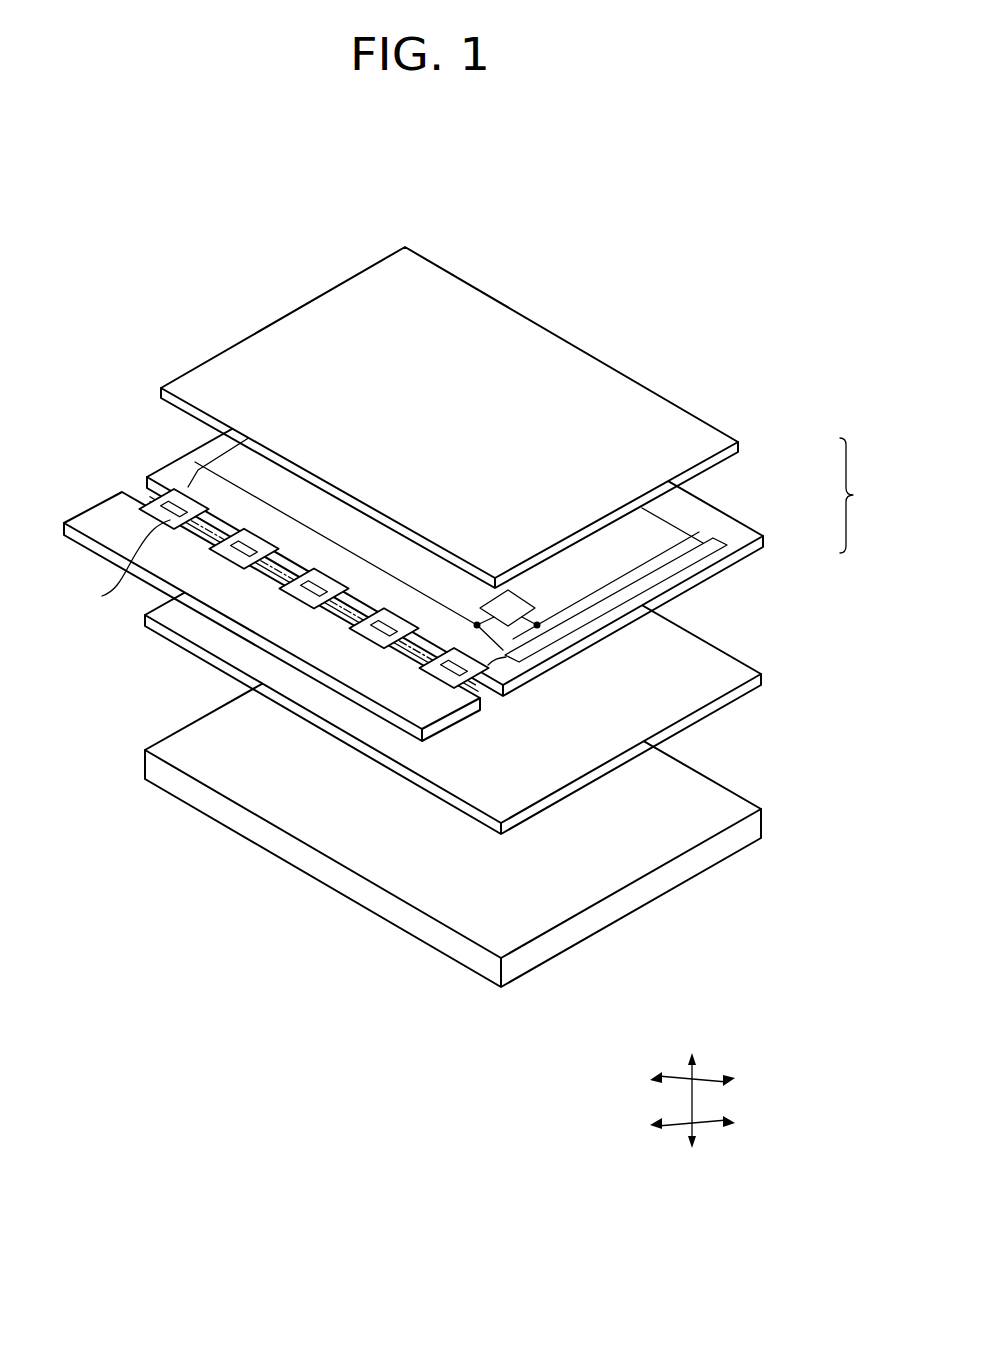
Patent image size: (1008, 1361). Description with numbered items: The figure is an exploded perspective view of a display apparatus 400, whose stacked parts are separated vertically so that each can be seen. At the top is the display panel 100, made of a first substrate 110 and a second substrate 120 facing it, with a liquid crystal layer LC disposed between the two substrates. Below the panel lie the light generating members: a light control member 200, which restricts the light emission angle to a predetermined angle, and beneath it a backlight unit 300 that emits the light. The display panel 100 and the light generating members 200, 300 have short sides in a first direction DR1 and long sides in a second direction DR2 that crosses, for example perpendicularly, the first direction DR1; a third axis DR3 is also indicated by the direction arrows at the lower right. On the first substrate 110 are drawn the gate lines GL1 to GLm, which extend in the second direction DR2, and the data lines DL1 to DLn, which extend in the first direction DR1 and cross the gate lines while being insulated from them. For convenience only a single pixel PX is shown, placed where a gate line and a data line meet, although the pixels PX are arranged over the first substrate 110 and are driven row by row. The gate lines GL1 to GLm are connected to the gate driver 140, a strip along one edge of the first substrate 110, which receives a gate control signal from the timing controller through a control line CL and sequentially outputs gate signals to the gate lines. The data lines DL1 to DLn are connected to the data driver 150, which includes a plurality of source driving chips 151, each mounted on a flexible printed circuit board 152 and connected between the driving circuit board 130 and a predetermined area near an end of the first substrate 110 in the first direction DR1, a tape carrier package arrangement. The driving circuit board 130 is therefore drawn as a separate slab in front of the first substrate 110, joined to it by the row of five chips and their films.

The display panel 100 is at (868, 495).
The first substrate 110 is at (764, 541).
The second substrate 120 is at (739, 443).
The driving circuit board 130 is at (106, 509).
The gate driver 140 is at (683, 562).
The data driver 150 is at (152, 494).
The source driving chip 151 is at (160, 512).
The flexible printed circuit board 152 is at (117, 566).
The light control member 200 is at (763, 679).
The backlight unit 300 is at (763, 819).
The display apparatus 400 is at (661, 256).
The liquid crystal layer LC is at (745, 497).
The pixel PX is at (420, 557).
The gate line GL1 is at (410, 586).
The gate line GLm is at (658, 518).
The data line DL1 is at (612, 582).
The data line DLn is at (229, 459).
The control line CL is at (517, 659).
The first direction DR1 is at (711, 1079).
The second direction DR2 is at (711, 1125).
The third direction DR3 is at (692, 1088).